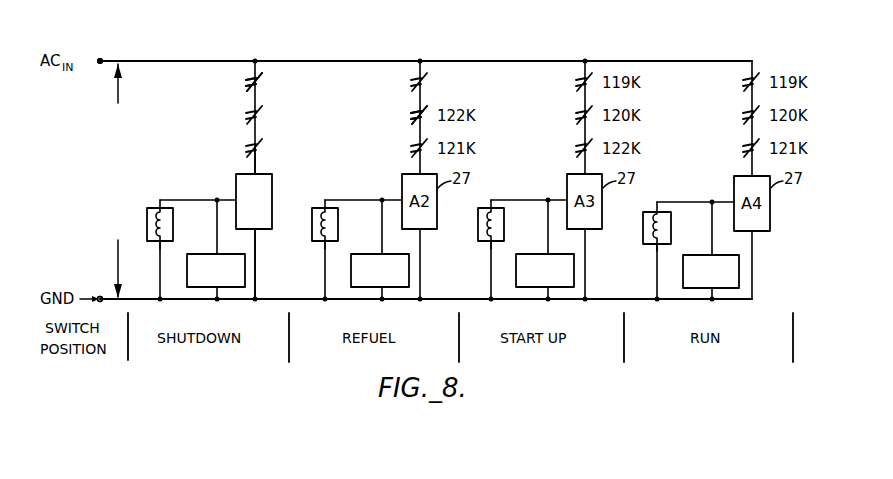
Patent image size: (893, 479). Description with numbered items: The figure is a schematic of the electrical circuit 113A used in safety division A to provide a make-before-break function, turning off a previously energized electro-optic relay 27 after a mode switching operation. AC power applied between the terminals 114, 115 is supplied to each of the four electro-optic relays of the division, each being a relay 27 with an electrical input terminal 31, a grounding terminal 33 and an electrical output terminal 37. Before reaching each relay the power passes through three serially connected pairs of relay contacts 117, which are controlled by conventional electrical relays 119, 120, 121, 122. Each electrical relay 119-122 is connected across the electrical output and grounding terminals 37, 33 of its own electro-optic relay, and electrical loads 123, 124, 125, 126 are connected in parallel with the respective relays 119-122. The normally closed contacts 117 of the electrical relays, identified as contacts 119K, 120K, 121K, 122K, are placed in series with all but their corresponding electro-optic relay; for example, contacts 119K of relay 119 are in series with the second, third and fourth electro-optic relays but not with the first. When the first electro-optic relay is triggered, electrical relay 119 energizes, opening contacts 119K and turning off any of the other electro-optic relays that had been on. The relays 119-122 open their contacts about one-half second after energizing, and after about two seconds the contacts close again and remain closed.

The AC power terminal 114 is at (100, 58).
The AC power terminal 115 is at (100, 296).
The electrical circuit 113A is at (118, 181).
The relay contacts 117 is at (402, 108).
The electro-optic relay 27 is at (273, 188).
The electrical input terminal 31 is at (250, 172).
The grounding terminal 33 is at (252, 231).
The electrical output terminal 37 is at (234, 196).
The electrical relay 119 is at (157, 243).
The electrical relay 120 is at (311, 226).
The electrical relay 121 is at (477, 226).
The electrical relay 122 is at (642, 228).
The electrical load 123 is at (208, 253).
The electrical load 124 is at (374, 253).
The electrical load 125 is at (541, 253).
The electrical load 126 is at (708, 254).
The normally closed contacts 119K is at (444, 82).
The normally closed contacts 120K is at (279, 115).
The normally closed contacts 121K is at (279, 148).
The normally closed contacts 122K is at (279, 82).